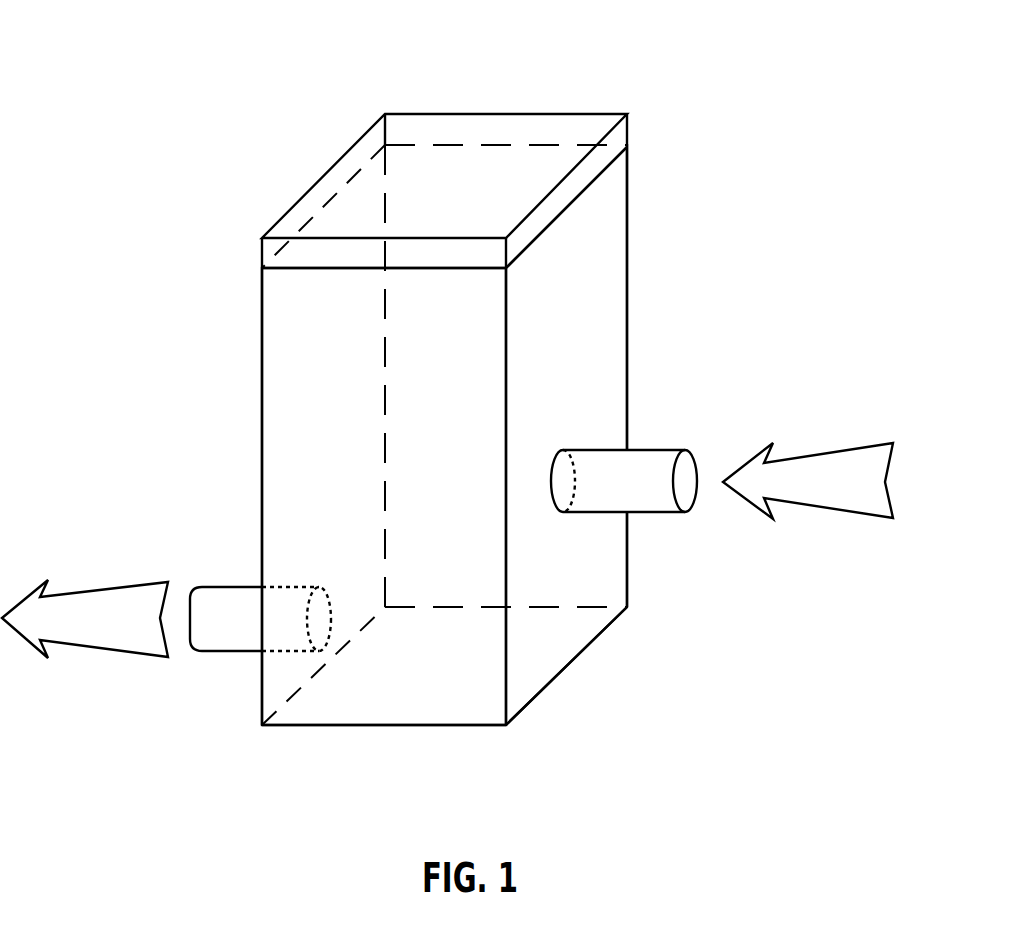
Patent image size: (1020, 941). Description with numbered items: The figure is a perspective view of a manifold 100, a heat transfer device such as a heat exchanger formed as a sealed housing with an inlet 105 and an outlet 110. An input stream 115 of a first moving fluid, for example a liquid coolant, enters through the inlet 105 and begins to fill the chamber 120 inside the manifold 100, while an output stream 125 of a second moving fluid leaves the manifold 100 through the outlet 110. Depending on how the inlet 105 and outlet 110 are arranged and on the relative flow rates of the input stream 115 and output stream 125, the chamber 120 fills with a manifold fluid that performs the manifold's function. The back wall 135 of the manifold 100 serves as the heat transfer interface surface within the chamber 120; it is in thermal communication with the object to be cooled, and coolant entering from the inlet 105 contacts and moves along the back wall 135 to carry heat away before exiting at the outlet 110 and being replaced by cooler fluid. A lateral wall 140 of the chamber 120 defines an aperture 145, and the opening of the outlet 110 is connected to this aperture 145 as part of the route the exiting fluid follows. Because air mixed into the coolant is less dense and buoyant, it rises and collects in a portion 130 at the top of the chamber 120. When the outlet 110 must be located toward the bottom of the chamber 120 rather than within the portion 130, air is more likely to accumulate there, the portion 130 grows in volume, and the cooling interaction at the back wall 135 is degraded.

The manifold 100 is at (122, 52).
The inlet 105 is at (647, 496).
The outlet 110 is at (248, 632).
The input stream 115 is at (827, 494).
The chamber 120 is at (425, 503).
The output stream 125 is at (103, 632).
The portion 130 is at (652, 149).
The back wall 135 is at (575, 388).
The lateral wall 140 is at (313, 380).
The aperture 145 is at (315, 618).